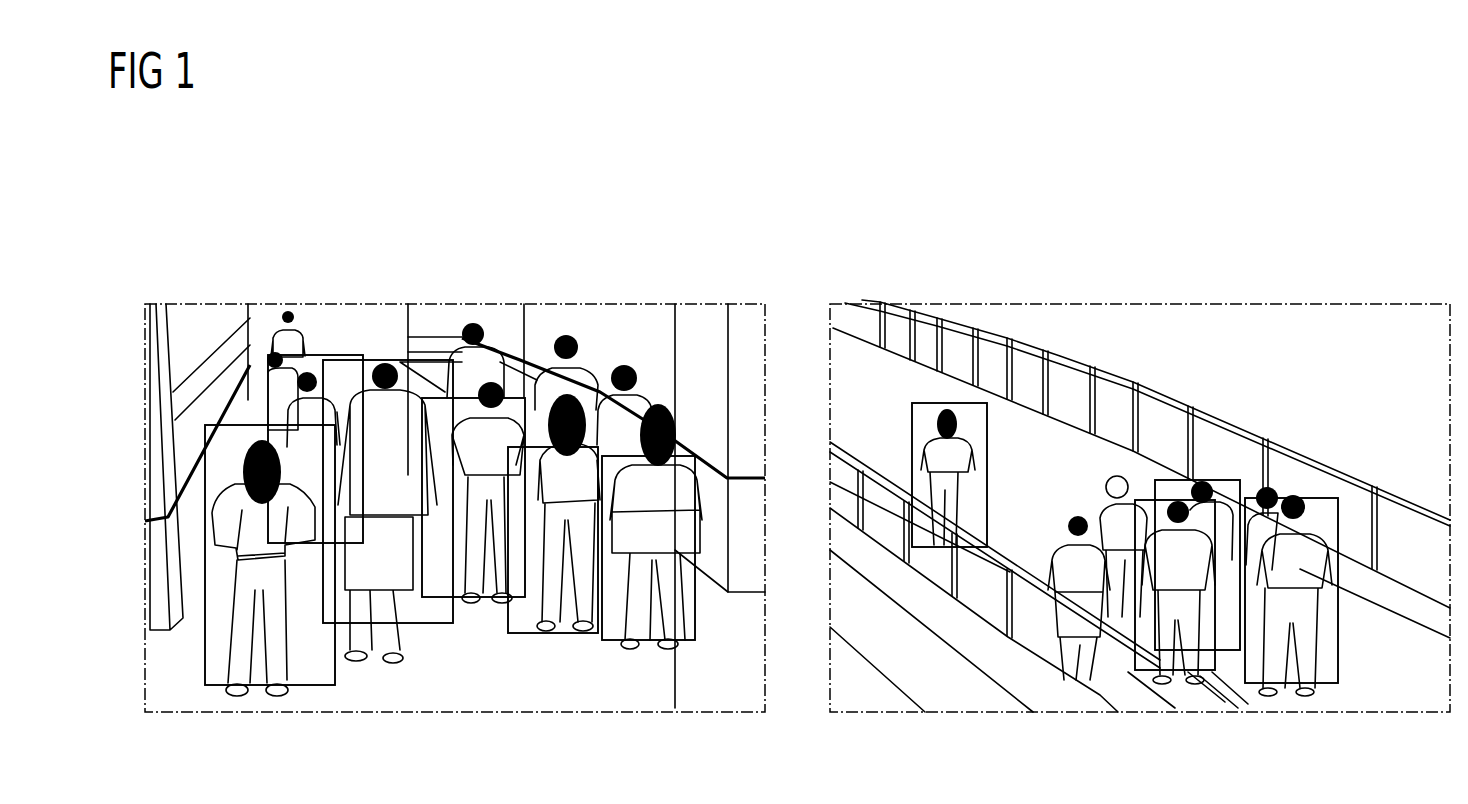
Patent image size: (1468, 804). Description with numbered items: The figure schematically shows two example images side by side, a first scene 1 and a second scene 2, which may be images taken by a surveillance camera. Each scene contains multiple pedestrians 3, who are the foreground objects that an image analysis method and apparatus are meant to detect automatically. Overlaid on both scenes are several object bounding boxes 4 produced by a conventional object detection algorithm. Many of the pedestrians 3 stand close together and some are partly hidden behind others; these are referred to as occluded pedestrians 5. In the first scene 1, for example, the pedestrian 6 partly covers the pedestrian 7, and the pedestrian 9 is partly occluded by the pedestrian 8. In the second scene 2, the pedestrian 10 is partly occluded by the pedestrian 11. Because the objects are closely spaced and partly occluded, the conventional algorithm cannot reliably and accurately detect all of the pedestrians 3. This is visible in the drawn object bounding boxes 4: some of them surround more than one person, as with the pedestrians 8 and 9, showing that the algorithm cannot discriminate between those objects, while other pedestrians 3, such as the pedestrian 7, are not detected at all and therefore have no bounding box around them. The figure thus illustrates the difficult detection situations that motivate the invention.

The first scene 1 is at (300, 192).
The second scene 2 is at (1060, 204).
The pedestrians 3 is at (250, 537).
The object bounding boxes 4 is at (213, 687).
The occluded pedestrians 5 is at (300, 420).
The pedestrian 6 is at (528, 380).
The pedestrian 7 is at (460, 337).
The pedestrian 8 is at (357, 640).
The pedestrian 9 is at (382, 510).
The pedestrian 10 is at (1258, 495).
The pedestrian 11 is at (1280, 688).